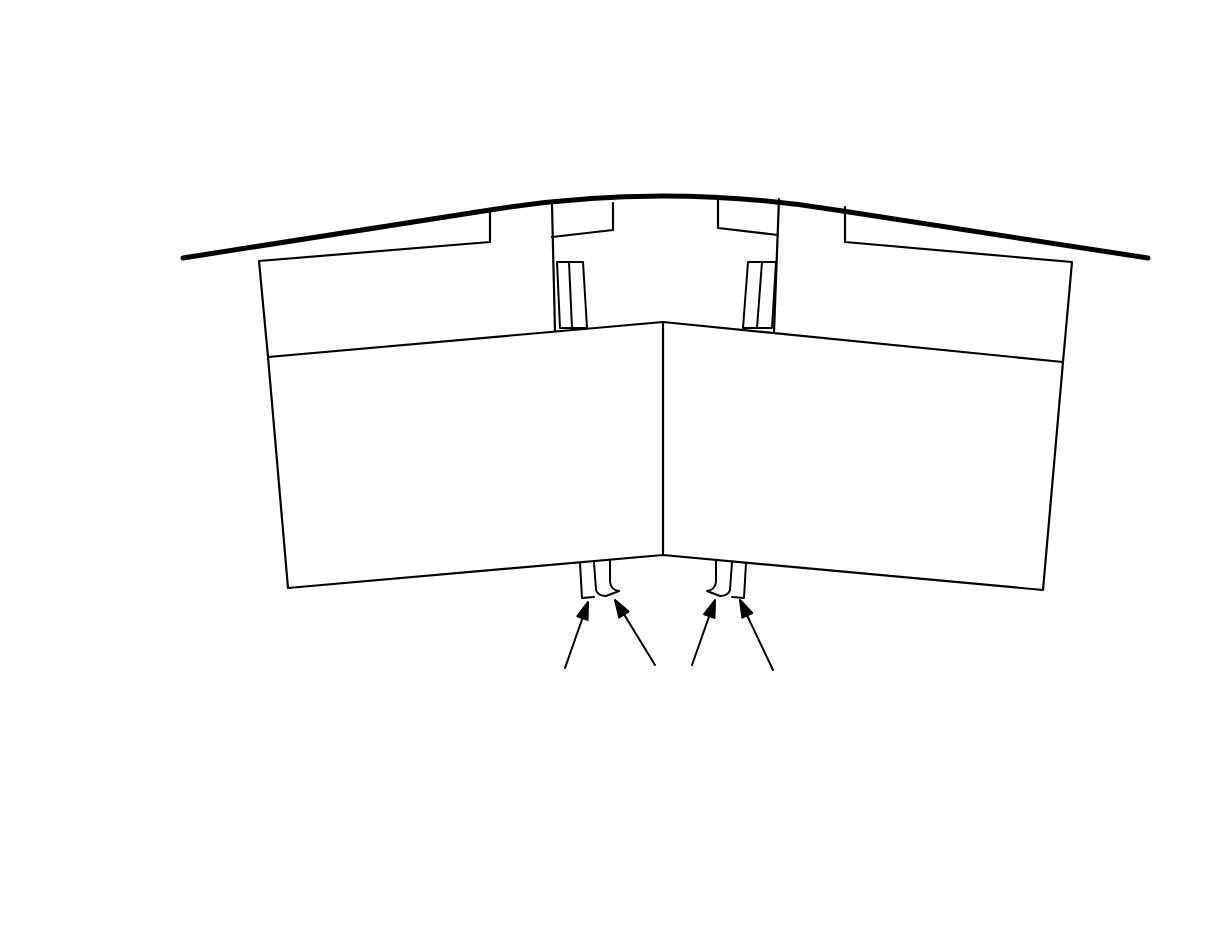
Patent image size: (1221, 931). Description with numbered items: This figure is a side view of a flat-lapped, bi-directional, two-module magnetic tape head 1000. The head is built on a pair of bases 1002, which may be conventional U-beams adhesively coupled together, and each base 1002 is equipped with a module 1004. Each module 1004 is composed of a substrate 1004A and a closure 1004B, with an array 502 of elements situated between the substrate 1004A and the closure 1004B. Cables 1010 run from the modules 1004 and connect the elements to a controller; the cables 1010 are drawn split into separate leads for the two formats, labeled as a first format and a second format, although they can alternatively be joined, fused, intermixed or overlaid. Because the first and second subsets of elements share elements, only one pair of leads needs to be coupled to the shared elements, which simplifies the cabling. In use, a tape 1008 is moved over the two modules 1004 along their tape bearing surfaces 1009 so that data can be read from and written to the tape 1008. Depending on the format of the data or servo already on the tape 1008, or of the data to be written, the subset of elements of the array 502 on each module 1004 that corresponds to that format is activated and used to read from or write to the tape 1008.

The two-module magnetic tape head 1000 is at (400, 165).
The tape 1008 is at (1065, 243).
The module 1004 is at (262, 316).
The substrate 1004A is at (338, 287).
The closure 1004B is at (713, 218).
The array of elements 502 is at (550, 185).
The tape bearing surface 1009 is at (519, 203).
The cables 1010 is at (747, 297).
The base 1002 is at (275, 443).